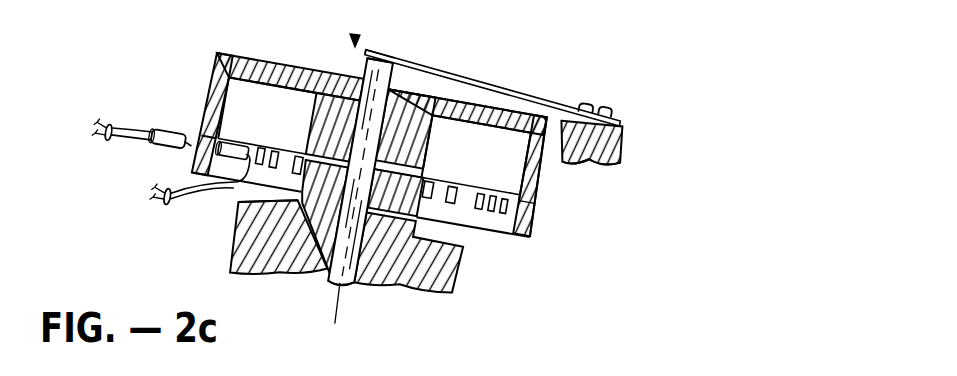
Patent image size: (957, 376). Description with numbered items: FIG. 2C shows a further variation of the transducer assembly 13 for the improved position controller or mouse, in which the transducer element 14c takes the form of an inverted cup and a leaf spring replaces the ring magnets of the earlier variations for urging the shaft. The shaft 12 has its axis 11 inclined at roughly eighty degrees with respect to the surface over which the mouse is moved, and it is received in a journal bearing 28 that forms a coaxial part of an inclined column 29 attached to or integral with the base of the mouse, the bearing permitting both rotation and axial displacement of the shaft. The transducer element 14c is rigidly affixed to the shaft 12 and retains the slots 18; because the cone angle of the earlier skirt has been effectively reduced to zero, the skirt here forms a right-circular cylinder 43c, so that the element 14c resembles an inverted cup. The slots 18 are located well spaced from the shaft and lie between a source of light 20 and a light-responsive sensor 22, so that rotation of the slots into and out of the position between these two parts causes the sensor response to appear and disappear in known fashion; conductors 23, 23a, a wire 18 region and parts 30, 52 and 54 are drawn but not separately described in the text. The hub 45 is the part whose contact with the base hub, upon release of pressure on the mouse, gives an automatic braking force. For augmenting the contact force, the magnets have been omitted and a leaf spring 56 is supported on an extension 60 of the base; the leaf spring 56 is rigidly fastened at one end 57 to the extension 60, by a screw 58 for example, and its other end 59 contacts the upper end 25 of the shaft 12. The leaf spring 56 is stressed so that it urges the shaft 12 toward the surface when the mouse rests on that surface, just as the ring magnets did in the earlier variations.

The axis 11 is at (343, 311).
The shaft 12 is at (374, 80).
The transducer assembly 13 is at (355, 40).
The transducer element 14c is at (283, 62).
The slots 18 is at (190, 147).
The source of light 20 is at (234, 144).
The light-responsive sensor 22 is at (161, 130).
The conductor 23 is at (114, 127).
The conductor 23a is at (167, 205).
The upper end 25 is at (367, 57).
The journal bearing 28 is at (232, 258).
The inclined column 29 is at (462, 277).
The rod end 30 is at (330, 288).
The right-circular cylinder 43c is at (212, 60).
The hub 45 is at (423, 97).
The support plate 52 is at (238, 202).
The contact strip 54 is at (413, 175).
The leaf spring 56 is at (424, 63).
The one end 57 is at (556, 107).
The screw 58 is at (613, 117).
The other end 59 is at (392, 52).
The extension 60 is at (600, 164).